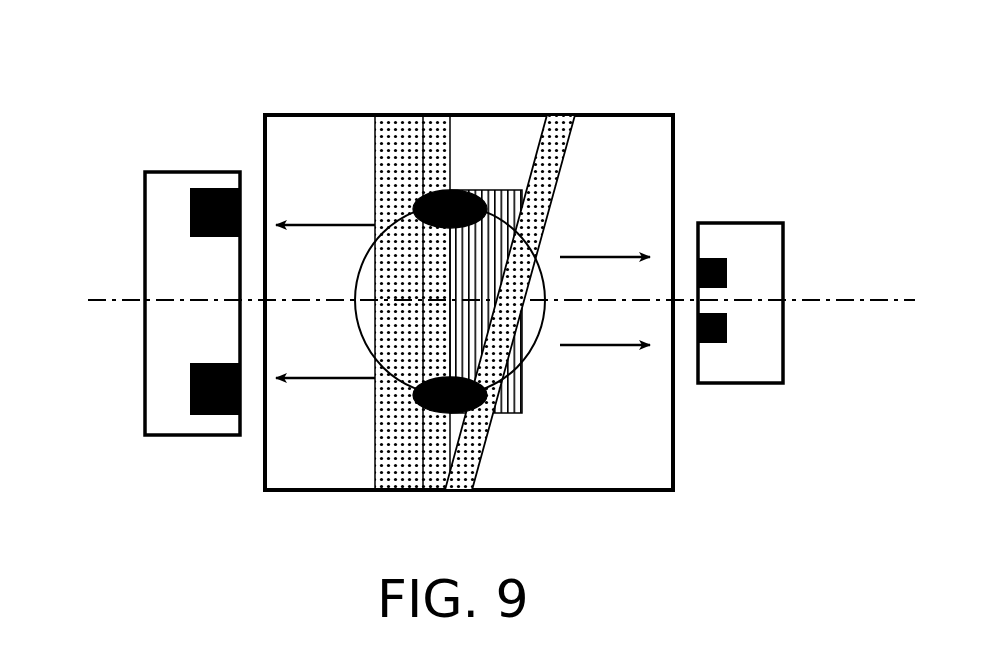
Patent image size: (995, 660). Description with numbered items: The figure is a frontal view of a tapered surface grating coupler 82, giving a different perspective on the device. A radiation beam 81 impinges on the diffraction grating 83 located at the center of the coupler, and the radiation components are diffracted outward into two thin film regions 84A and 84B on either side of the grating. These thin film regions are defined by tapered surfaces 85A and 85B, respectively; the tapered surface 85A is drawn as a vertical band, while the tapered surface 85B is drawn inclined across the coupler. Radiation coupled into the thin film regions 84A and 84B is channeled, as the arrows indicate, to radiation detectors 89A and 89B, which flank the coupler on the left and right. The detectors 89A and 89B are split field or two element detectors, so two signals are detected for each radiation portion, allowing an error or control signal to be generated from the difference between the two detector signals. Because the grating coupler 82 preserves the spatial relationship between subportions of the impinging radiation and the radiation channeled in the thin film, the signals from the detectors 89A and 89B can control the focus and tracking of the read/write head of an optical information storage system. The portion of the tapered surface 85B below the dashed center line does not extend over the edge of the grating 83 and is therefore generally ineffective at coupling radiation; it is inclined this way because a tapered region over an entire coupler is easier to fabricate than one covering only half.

The radiation beam 81 is at (530, 358).
The tapered surface grating coupler 82 is at (697, 430).
The diffraction grating 83 is at (480, 190).
The thin film region 84A is at (296, 432).
The thin film region 84B is at (617, 200).
The tapered surface 85A is at (395, 125).
The tapered surface 85B is at (557, 125).
The radiation detector 89A is at (145, 258).
The radiation detector 89B is at (783, 252).